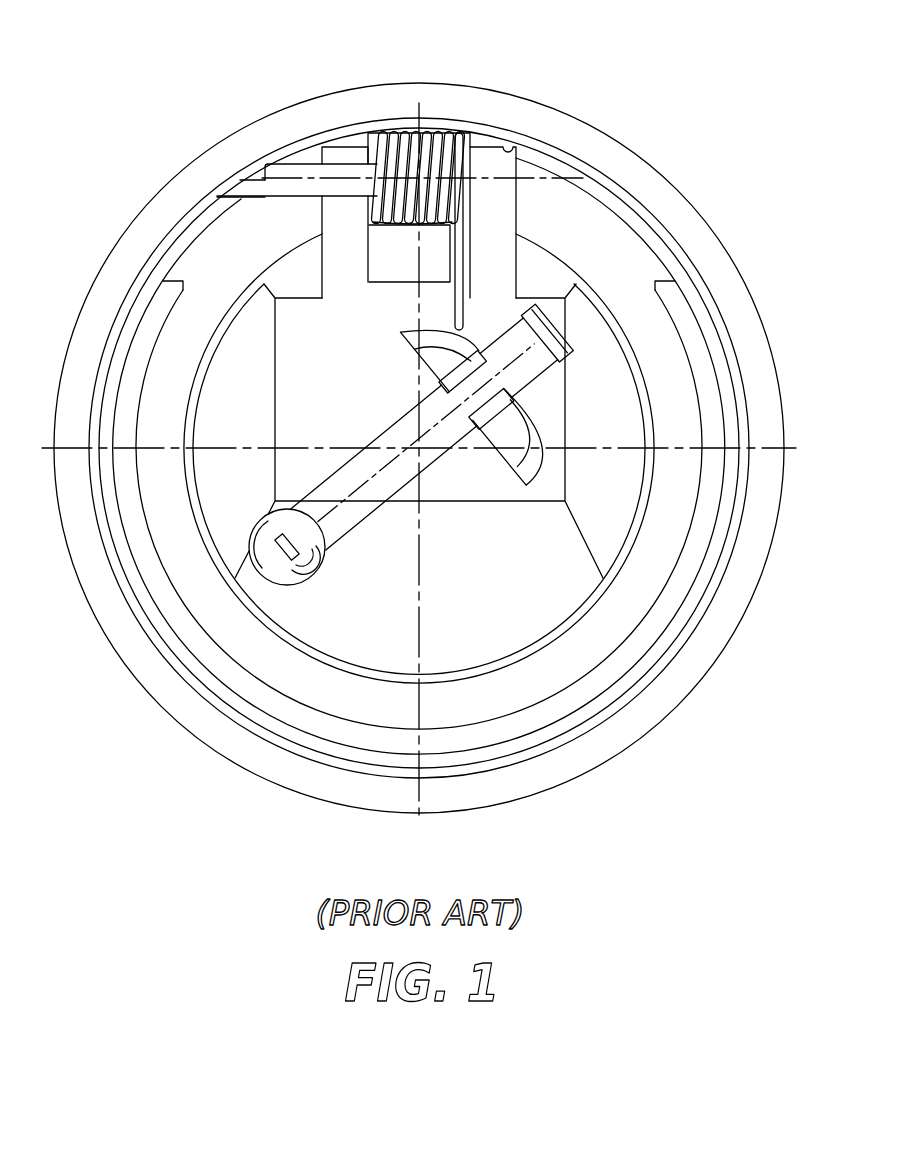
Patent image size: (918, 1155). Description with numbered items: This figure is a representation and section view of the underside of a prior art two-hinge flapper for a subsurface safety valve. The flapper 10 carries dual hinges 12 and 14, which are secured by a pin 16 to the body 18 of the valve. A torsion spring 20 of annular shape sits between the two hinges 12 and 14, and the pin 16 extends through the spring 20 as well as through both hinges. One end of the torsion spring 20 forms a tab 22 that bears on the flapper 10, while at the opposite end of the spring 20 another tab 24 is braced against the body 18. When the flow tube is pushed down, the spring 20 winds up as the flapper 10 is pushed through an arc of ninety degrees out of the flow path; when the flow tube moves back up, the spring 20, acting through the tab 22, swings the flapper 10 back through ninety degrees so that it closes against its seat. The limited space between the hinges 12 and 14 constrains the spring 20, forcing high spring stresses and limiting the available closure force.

The flapper 10 is at (593, 356).
The hinge 12 is at (340, 145).
The hinge 14 is at (504, 148).
The pin 16 is at (279, 168).
The body 18 is at (617, 137).
The torsion spring 20 is at (436, 140).
The tab 22 is at (447, 286).
The tab 24 is at (373, 133).